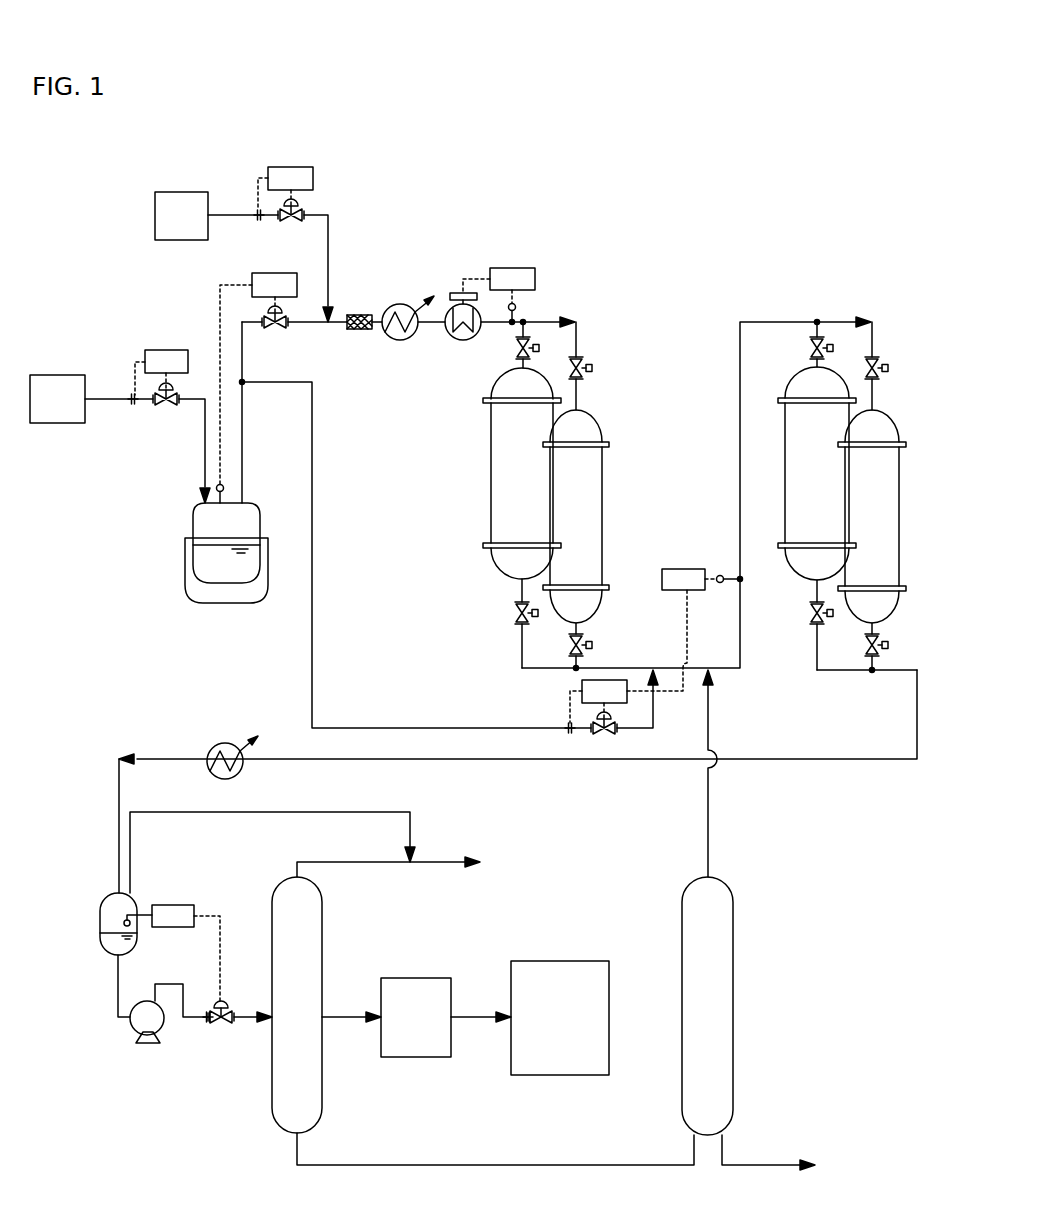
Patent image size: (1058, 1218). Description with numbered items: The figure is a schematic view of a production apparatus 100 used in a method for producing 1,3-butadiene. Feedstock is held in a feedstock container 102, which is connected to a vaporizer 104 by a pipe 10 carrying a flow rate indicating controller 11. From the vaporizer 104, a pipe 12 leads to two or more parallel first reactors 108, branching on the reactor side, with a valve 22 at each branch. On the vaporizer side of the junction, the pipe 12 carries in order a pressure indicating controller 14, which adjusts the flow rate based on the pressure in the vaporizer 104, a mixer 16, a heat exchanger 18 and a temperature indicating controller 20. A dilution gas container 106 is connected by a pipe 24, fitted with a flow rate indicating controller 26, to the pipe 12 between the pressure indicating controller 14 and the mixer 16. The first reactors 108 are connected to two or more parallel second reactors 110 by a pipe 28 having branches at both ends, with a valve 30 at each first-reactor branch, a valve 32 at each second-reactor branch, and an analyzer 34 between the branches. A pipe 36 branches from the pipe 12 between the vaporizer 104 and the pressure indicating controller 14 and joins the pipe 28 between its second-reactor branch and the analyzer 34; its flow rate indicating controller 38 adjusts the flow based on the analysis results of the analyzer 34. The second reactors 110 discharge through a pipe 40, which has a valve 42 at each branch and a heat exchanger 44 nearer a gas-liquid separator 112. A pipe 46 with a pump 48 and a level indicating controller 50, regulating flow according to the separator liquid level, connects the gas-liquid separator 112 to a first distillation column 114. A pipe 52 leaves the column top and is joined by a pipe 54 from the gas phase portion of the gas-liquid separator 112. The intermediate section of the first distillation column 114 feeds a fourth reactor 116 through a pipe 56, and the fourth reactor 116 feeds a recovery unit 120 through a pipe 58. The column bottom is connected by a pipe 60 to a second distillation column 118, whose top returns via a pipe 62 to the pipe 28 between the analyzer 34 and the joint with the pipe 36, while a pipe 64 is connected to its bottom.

The production apparatus 100 is at (658, 188).
The feedstock container 102 is at (57, 375).
The vaporizer 104 is at (193, 527).
The dilution gas container 106 is at (182, 192).
The first reactors 108 is at (490, 474).
The second reactors 110 is at (880, 410).
The gas-liquid separator 112 is at (103, 896).
The first distillation column 114 is at (323, 890).
The fourth reactor 116 is at (415, 978).
The second distillation column 118 is at (734, 1000).
The recovery unit 120 is at (560, 961).
The pipe 10 is at (205, 455).
The flow rate indicating controller 11 is at (166, 350).
The pipe 12 is at (551, 322).
The pressure indicating controller 14 is at (270, 273).
The mixer 16 is at (358, 315).
The heat exchanger 18 is at (398, 304).
The temperature indicating controller 20 is at (511, 268).
The valve 22 is at (516, 350).
The pipe 24 is at (330, 232).
The flow rate indicating controller 26 is at (290, 167).
The pipe 28 is at (740, 450).
The valve 30 is at (516, 613).
The valve 32 is at (811, 348).
The analyzer 34 is at (684, 569).
The pipe 36 is at (438, 728).
The flow rate indicating controller 38 is at (582, 690).
The pipe 40 is at (870, 760).
The valve 42 is at (830, 624).
The heat exchanger 44 is at (225, 743).
The pipe 46 is at (118, 985).
The pump 48 is at (145, 1045).
The level indicating controller 50 is at (172, 905).
The pipe 52 is at (352, 862).
The pipe 54 is at (411, 822).
The pipe 56 is at (350, 1017).
The pipe 58 is at (480, 1017).
The pipe 60 is at (495, 1165).
The pipe 62 is at (710, 820).
The pipe 64 is at (765, 1165).